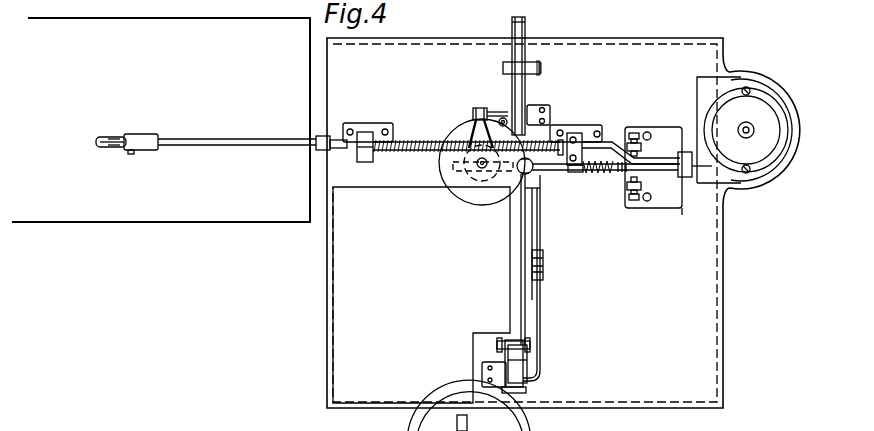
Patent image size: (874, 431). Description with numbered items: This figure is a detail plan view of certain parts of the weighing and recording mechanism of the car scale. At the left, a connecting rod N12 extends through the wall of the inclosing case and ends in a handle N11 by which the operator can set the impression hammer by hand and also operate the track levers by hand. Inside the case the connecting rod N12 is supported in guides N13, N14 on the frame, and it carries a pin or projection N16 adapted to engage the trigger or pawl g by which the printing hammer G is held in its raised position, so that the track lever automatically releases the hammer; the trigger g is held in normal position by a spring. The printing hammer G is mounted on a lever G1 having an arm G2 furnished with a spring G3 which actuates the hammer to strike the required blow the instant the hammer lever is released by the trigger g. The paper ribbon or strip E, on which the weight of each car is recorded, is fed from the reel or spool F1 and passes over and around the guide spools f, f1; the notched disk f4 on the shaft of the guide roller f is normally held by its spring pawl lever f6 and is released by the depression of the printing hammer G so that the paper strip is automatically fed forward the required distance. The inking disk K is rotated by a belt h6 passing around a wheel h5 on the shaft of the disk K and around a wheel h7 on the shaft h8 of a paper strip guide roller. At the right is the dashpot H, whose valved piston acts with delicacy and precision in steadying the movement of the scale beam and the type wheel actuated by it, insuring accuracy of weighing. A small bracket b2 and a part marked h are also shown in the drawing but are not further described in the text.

The handle N11 is at (116, 150).
The connecting rod N12 is at (628, 108).
The guide N13 is at (366, 165).
The guide N14 is at (592, 126).
The pin or projection N16 is at (683, 216).
The reel or spool F1 is at (528, 29).
The bracket b2 is at (530, 110).
The wheel h5 is at (472, 180).
The belt h6 is at (466, 130).
The wheel h7 is at (478, 110).
The shaft h8 is at (499, 112).
The inking disk K is at (447, 190).
The printing hammer G is at (514, 178).
The lever G1 is at (621, 172).
The arm G2 is at (672, 210).
The spring G3 is at (594, 172).
The dashpot H is at (741, 130).
The dial center shaft h is at (746, 133).
The paper ribbon or strip E is at (513, 257).
The guide spool f is at (518, 395).
The guide spool f1 is at (513, 343).
The notched disk f4 is at (527, 366).
The spring pawl lever f6 is at (530, 335).
The trigger or pawl g is at (652, 208).